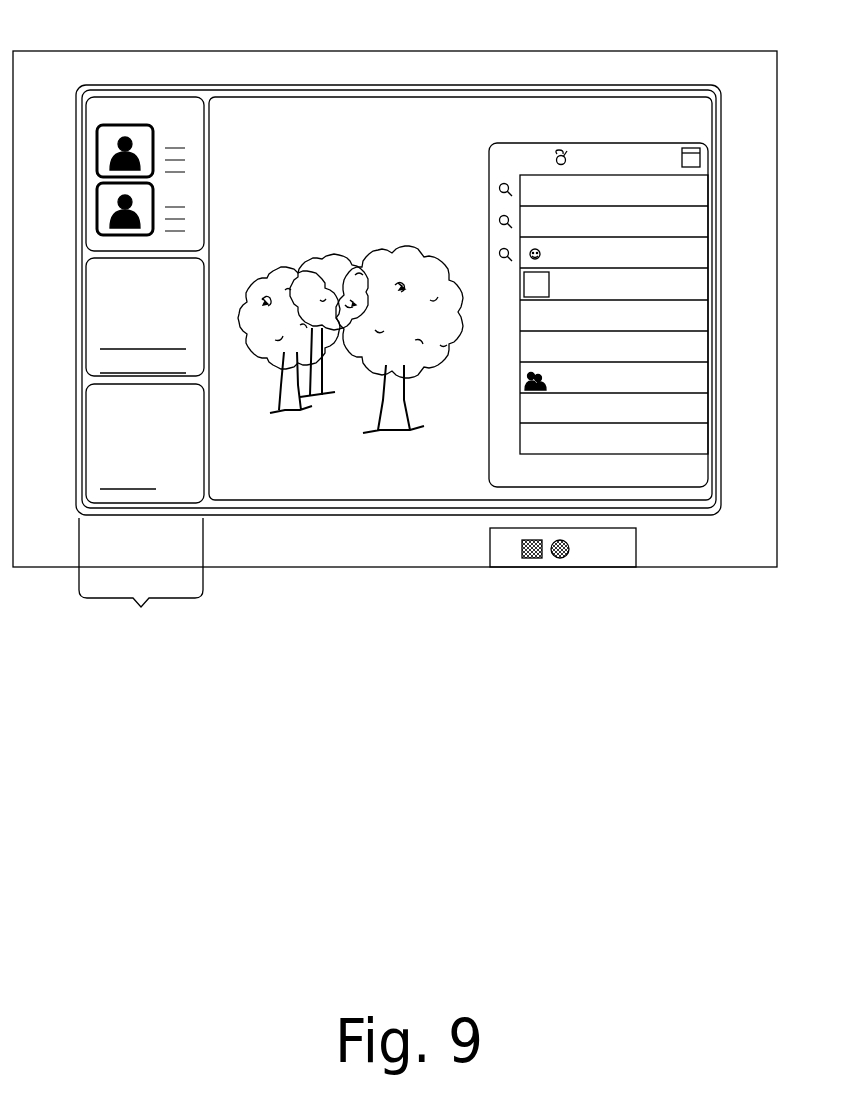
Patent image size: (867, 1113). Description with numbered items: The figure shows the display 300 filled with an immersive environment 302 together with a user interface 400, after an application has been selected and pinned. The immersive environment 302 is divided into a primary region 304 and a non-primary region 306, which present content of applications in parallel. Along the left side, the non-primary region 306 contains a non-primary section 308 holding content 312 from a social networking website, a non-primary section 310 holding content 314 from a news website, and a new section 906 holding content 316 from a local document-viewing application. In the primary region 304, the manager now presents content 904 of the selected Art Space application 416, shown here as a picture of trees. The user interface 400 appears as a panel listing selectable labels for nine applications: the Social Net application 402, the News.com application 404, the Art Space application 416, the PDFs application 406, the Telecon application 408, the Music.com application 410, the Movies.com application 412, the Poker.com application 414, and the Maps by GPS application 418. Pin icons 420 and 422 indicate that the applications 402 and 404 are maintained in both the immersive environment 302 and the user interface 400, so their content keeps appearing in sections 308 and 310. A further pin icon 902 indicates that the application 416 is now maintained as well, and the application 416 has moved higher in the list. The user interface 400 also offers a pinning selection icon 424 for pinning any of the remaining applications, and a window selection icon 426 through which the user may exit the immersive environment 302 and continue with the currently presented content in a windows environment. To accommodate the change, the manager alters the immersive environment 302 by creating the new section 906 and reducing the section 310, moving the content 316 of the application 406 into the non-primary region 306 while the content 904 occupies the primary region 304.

The display 300 is at (402, 51).
The immersive environment 302 is at (200, 88).
The primary region 304 is at (702, 121).
The non-primary region 306 is at (159, 635).
The non-primary section 308 is at (196, 121).
The non-primary section 310 is at (196, 284).
The content from a social networking website 312 is at (114, 174).
The content from a news website 314 is at (114, 317).
The content from a local document-viewing application 316 is at (114, 443).
The user interface 400 is at (526, 142).
The Social Net application 402 is at (709, 187).
The News.com application 404 is at (709, 218).
The PDFs application 406 is at (709, 280).
The Telecon application 408 is at (709, 310).
The Music.com application 410 is at (709, 342).
The Movies.com application 412 is at (709, 373).
The Poker.com application 414 is at (709, 403).
The Art Space application 416 is at (709, 250).
The Maps by GPS application 418 is at (709, 435).
The pin icon 420 is at (494, 167).
The pin icon 422 is at (494, 202).
The pinning selection icon 424 is at (566, 146).
The window selection icon 426 is at (706, 141).
The pin icon 902 is at (494, 237).
The content 904 is at (295, 255).
The new section 906 is at (196, 411).